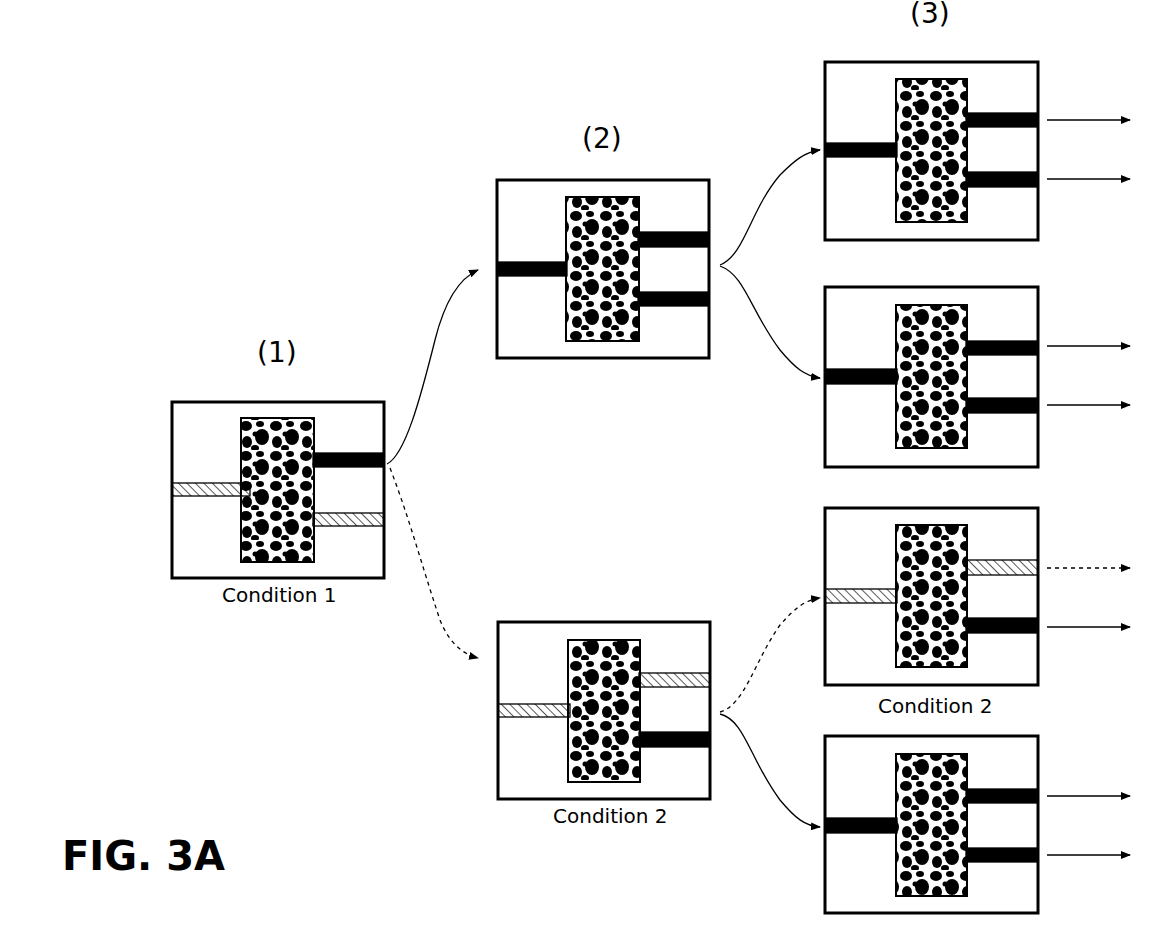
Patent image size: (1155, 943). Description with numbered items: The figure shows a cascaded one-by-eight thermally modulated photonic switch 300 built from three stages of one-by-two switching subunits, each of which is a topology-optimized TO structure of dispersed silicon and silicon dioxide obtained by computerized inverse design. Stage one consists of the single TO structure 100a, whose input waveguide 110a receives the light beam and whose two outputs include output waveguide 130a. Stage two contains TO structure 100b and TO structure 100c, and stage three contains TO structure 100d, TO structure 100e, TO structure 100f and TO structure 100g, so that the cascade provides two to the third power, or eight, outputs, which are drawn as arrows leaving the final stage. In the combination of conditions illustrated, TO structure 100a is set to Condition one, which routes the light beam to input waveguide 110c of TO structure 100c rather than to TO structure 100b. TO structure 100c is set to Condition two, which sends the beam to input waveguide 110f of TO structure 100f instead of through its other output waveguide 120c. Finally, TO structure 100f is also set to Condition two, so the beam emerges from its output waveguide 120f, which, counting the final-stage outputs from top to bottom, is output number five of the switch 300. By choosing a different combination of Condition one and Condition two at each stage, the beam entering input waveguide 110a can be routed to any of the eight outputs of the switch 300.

The cascaded 1×8 thermally modulated photonic switch 300 is at (343, 120).
The TO structure 100a is at (172, 540).
The input waveguide 110a is at (183, 482).
The output waveguide 130a is at (338, 527).
The TO structure 100b is at (666, 180).
The TO structure 100c is at (625, 622).
The input waveguide 110c is at (522, 703).
The output waveguide 120c is at (662, 673).
The TO structure 100d is at (1040, 88).
The TO structure 100e is at (1040, 317).
The TO structure 100f is at (1040, 533).
The input waveguide 110f is at (850, 590).
The output waveguide 120f is at (1003, 575).
The TO structure 100g is at (1040, 762).